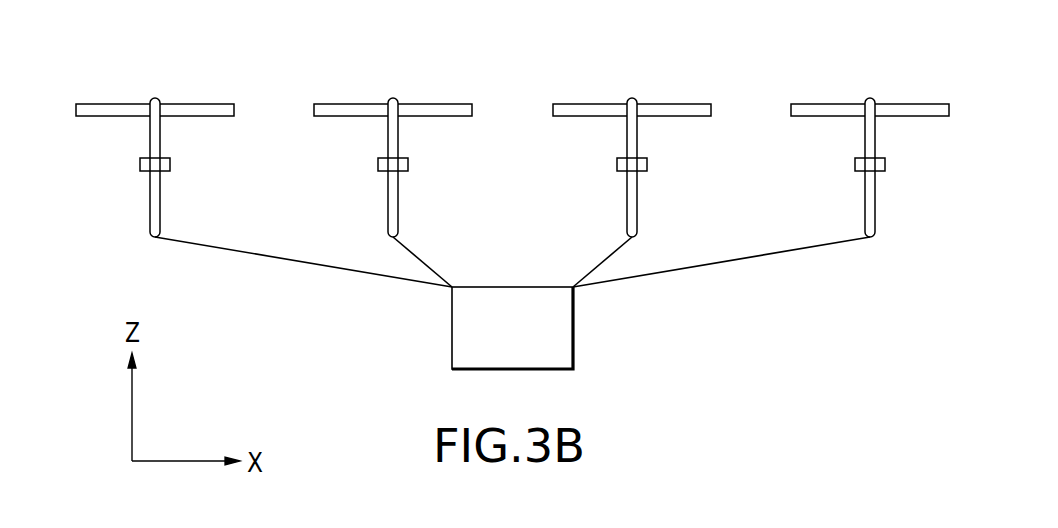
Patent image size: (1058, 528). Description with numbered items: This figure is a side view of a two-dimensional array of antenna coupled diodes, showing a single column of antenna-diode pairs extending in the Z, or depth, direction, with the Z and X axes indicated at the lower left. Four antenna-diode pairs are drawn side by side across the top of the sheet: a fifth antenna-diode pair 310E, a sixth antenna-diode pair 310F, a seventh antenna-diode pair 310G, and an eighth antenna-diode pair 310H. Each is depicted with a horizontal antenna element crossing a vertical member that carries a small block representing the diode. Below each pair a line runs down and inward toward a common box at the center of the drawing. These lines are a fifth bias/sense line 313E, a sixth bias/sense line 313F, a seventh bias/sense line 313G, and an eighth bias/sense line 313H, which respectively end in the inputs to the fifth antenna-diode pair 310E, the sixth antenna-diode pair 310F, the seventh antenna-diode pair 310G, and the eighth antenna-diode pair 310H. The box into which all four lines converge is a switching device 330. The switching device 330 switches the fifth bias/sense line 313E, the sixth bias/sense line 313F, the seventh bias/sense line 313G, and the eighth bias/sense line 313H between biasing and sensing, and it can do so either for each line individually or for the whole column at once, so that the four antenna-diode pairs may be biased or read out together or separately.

The fifth antenna-diode pair 310E is at (155, 98).
The sixth antenna-diode pair 310F is at (393, 98).
The seventh antenna-diode pair 310G is at (632, 98).
The eighth antenna-diode pair 310H is at (870, 98).
The fifth bias/sense line 313E is at (270, 240).
The sixth bias/sense line 313F is at (390, 240).
The seventh bias/sense line 313G is at (597, 240).
The eighth bias/sense line 313H is at (721, 240).
The switching device 330 is at (495, 339).